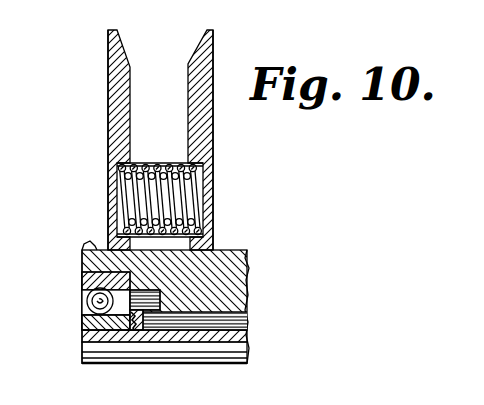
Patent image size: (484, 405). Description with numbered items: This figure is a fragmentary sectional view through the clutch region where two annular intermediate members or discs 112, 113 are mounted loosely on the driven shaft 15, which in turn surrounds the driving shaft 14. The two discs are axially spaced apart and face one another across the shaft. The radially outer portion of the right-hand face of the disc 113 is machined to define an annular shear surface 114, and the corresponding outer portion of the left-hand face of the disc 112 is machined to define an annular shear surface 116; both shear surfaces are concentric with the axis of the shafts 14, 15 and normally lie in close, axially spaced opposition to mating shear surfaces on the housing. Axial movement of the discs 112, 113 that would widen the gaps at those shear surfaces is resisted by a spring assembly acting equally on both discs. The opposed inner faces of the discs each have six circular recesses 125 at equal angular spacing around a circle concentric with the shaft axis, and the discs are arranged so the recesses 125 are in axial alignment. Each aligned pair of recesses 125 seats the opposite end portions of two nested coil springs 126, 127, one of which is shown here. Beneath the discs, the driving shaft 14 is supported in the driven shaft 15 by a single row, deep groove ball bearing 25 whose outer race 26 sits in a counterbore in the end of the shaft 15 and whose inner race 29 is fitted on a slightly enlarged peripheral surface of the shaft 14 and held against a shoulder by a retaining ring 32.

The annular intermediate member or disc 112 is at (119, 72).
The annular intermediate member or disc 113 is at (203, 57).
The annular shear surface 114 is at (213, 119).
The annular shear surface 116 is at (108, 137).
The circular recesses 125 is at (123, 198).
The coil spring 126 is at (163, 182).
The coil spring 127 is at (197, 221).
The driven shaft 15 is at (233, 278).
The driving shaft 14 is at (247, 337).
The single row deep groove ball bearing 25 is at (92, 300).
The outer race 26 is at (82, 282).
The inner race 29 is at (82, 322).
The retaining ring 32 is at (134, 330).